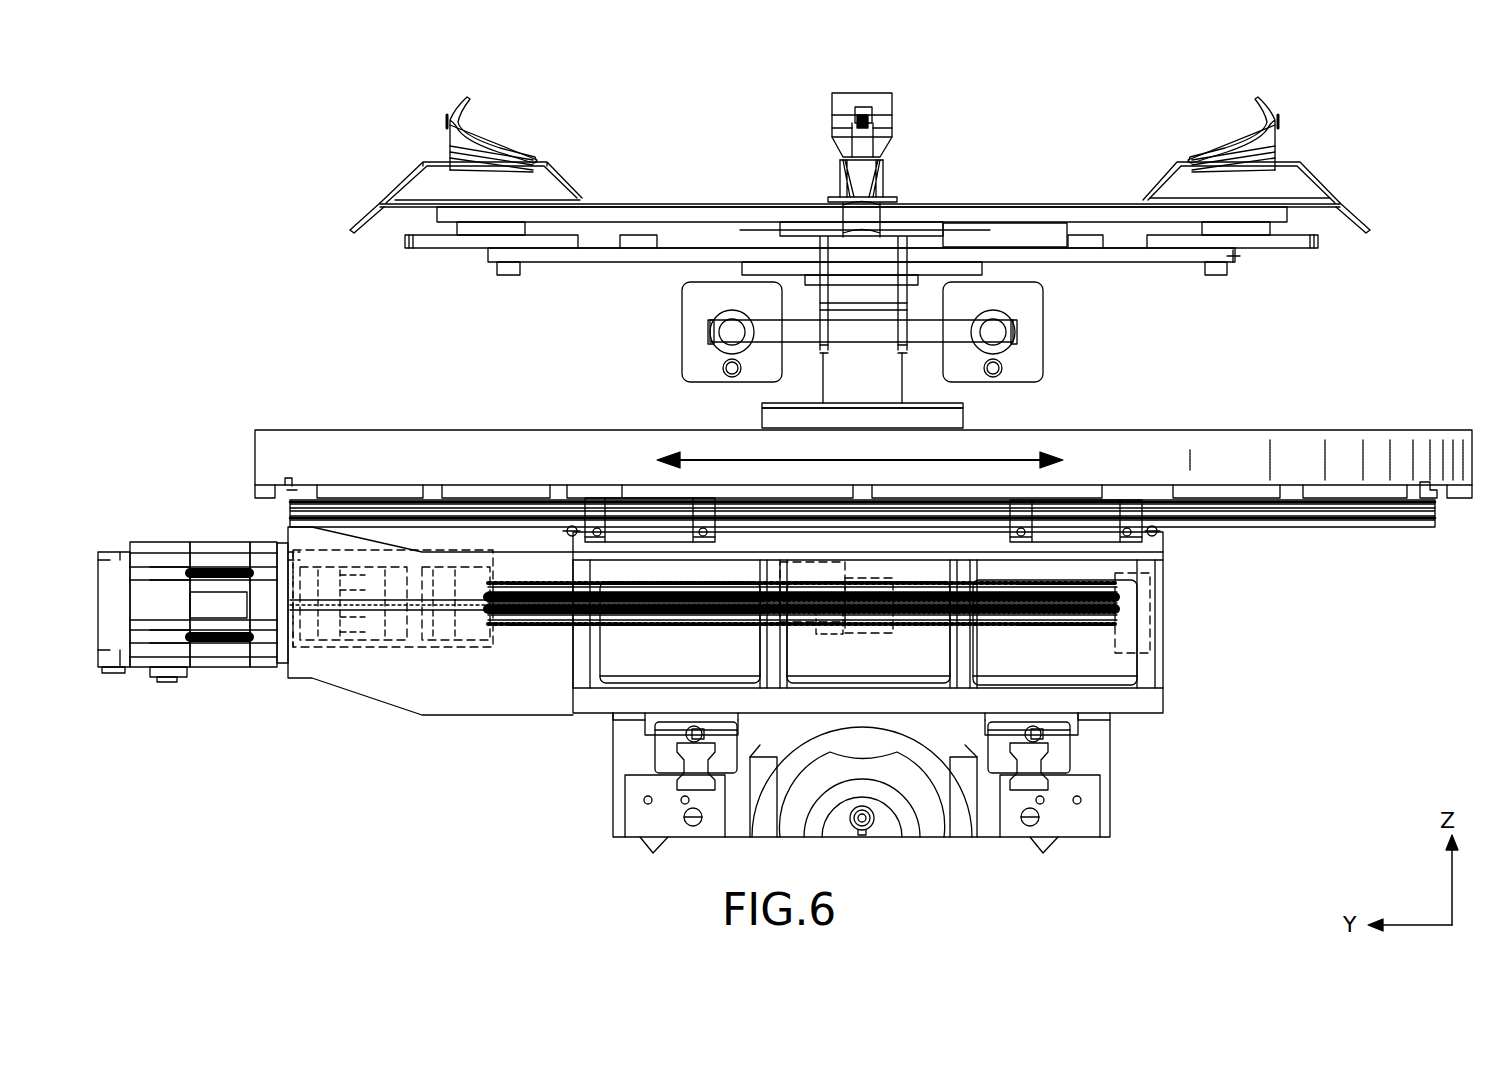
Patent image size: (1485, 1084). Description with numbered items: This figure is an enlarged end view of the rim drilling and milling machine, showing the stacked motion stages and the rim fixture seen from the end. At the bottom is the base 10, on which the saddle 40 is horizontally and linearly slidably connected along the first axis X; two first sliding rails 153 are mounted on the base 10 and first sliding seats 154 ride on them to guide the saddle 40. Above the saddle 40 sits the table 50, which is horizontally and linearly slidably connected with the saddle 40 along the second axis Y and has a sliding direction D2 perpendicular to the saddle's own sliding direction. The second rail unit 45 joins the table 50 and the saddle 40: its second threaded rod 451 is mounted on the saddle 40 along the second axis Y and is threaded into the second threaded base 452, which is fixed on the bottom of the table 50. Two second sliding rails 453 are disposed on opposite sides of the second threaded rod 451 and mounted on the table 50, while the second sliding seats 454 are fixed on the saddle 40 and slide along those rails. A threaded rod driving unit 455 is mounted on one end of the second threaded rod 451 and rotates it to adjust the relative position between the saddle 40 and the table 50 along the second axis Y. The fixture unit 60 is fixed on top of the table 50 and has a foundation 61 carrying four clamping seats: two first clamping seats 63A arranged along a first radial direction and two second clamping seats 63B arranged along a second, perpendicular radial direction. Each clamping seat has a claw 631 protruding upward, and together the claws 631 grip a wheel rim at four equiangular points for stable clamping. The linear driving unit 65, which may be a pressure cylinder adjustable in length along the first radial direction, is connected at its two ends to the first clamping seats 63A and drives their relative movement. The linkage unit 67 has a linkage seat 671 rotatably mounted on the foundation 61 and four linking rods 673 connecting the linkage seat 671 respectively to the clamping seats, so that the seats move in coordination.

The base 10 is at (590, 780).
The saddle 40 is at (1188, 658).
The second rail unit 45 is at (1238, 535).
The table 50 is at (398, 403).
The fixture unit 60 is at (1352, 158).
The foundation 61 is at (747, 205).
The first clamping seat 63A is at (907, 122).
The second clamping seat 63B is at (563, 128).
The linear driving unit 65 is at (1065, 362).
The linkage unit 67 is at (1152, 275).
The first sliding rail 153 is at (1032, 773).
The first sliding seat 154 is at (1057, 750).
The second threaded rod 451 is at (708, 628).
The second threaded base 452 is at (872, 640).
The second sliding rail 453 is at (1328, 512).
The second sliding seat 454 is at (1072, 518).
The threaded rod driving unit 455 is at (225, 655).
The claw 631 is at (458, 118).
The linkage seat 671 is at (970, 265).
The linking rod 673 is at (620, 253).
The sliding direction D2 is at (700, 458).